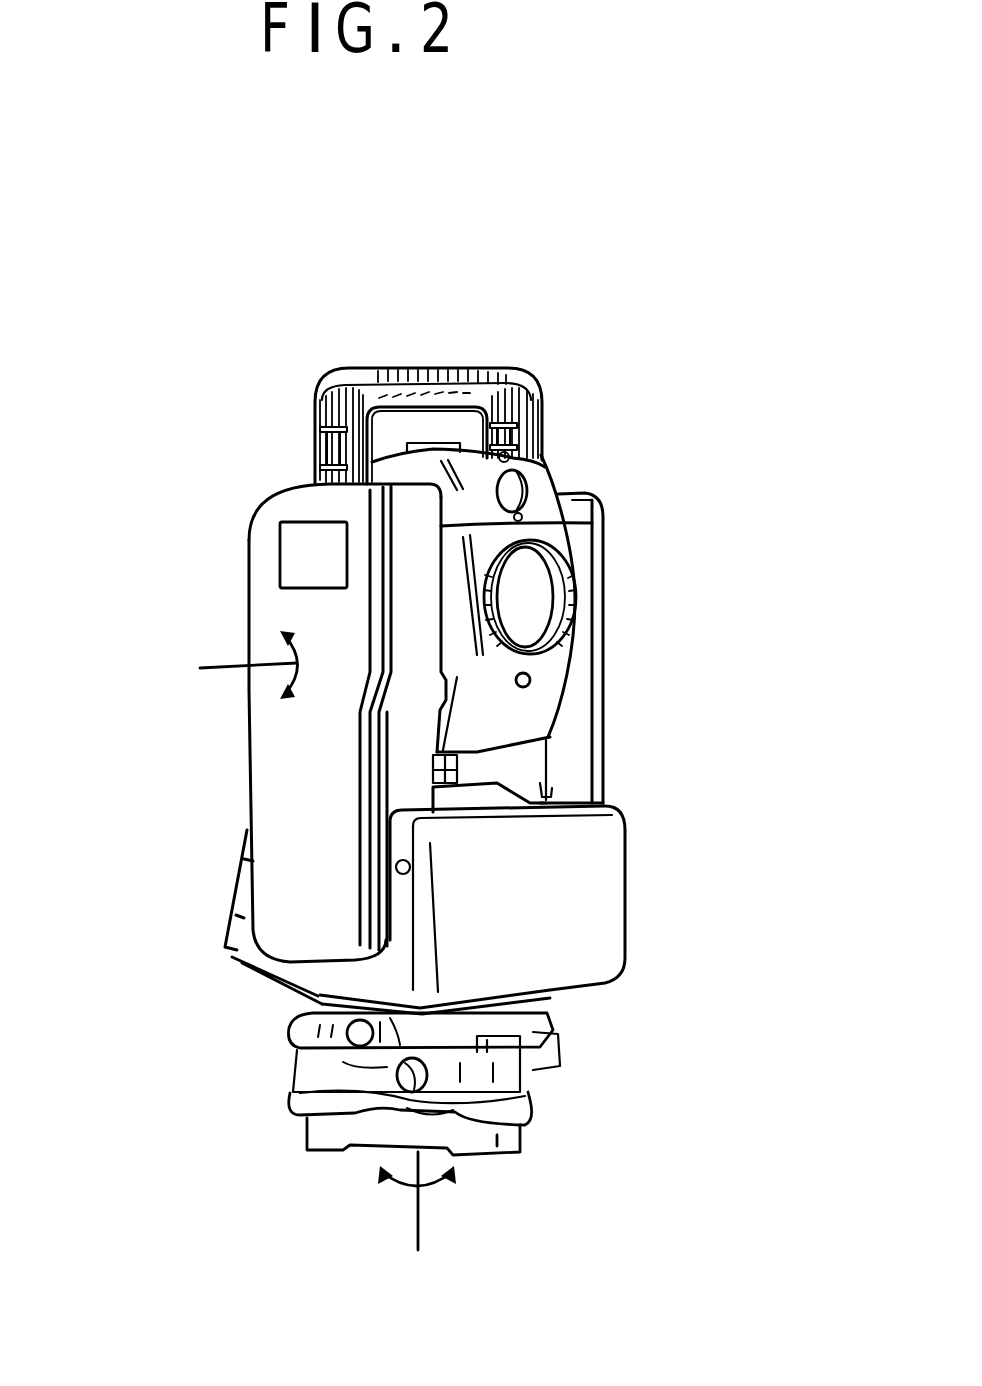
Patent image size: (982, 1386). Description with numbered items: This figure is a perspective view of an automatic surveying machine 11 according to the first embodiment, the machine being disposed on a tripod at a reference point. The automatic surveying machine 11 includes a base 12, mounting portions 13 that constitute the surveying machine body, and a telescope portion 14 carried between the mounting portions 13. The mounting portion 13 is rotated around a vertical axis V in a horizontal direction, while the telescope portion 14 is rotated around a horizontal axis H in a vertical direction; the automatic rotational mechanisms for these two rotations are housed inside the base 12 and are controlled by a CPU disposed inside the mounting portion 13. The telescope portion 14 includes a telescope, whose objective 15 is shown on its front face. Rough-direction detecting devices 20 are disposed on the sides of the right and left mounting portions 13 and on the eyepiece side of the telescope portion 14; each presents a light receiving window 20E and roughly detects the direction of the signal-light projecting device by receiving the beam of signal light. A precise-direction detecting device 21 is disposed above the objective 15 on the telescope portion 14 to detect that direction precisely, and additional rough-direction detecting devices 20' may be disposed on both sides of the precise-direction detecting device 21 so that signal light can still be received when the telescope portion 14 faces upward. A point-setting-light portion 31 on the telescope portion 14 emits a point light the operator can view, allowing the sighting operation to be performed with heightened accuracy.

The automatic surveying machine 11 is at (459, 734).
The base 12 is at (553, 1017).
The mounting portion 13 is at (603, 737).
The telescope portion 14 is at (449, 588).
The objective 15 is at (560, 597).
The rough-direction detecting device 20 is at (251, 637).
The light receiving window 20E is at (297, 560).
The rough-direction detecting devices 20' is at (673, 475).
The precise-direction detecting device 21 is at (527, 494).
The point-setting-light portion 31 is at (531, 680).
The horizontal axis H is at (227, 672).
The vertical axis V is at (423, 1212).